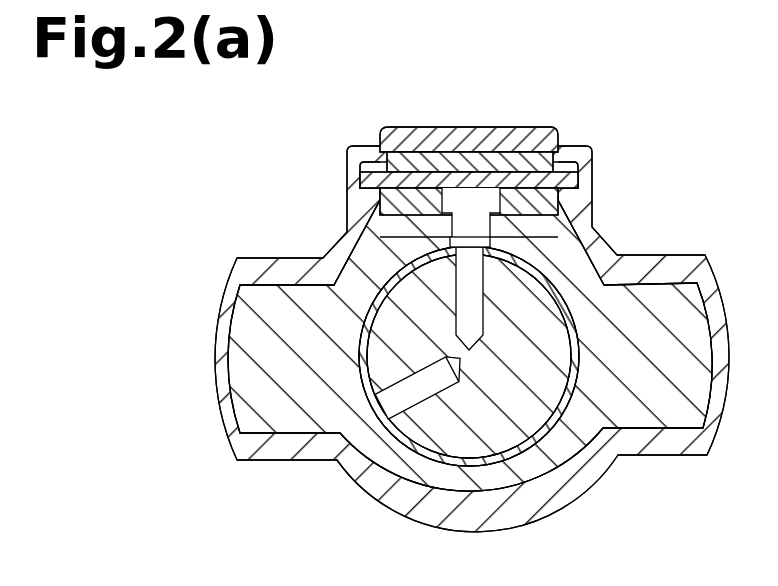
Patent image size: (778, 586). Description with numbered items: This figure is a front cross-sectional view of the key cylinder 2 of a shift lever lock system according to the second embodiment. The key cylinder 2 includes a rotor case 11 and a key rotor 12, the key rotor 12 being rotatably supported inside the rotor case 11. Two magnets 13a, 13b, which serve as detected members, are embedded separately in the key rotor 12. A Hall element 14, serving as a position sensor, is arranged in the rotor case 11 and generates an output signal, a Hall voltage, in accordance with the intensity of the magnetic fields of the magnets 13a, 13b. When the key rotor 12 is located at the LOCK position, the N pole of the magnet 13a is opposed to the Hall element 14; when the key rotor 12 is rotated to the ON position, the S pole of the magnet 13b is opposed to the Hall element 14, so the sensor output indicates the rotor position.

The key cylinder 2 is at (271, 209).
The rotor case 11 is at (586, 478).
The key rotor 12 is at (549, 386).
The magnet 13a is at (484, 305).
The magnet 13b is at (433, 388).
The Hall element 14 is at (467, 205).